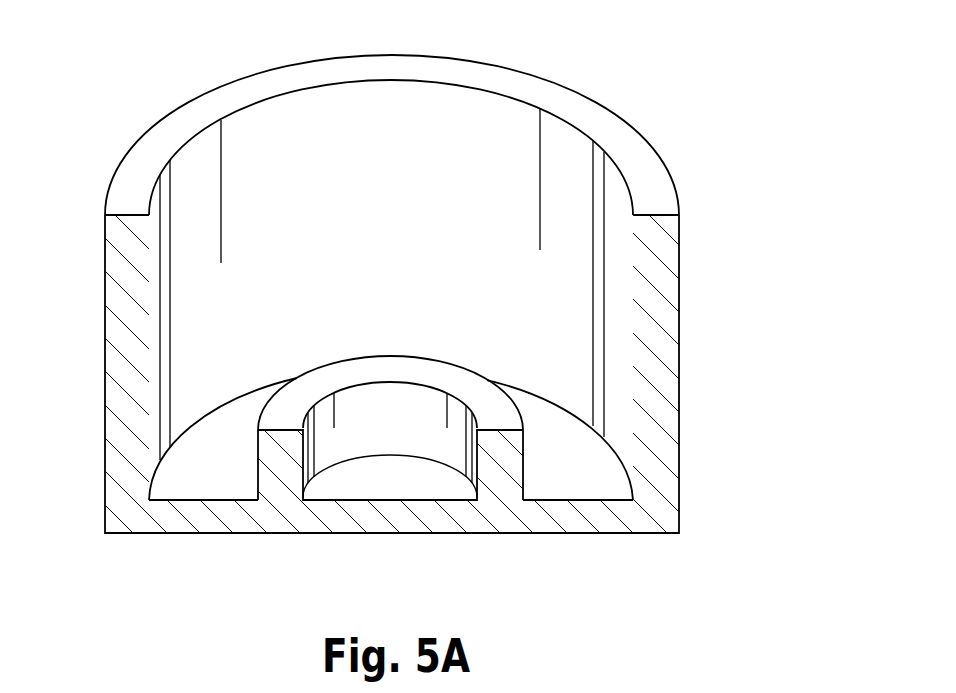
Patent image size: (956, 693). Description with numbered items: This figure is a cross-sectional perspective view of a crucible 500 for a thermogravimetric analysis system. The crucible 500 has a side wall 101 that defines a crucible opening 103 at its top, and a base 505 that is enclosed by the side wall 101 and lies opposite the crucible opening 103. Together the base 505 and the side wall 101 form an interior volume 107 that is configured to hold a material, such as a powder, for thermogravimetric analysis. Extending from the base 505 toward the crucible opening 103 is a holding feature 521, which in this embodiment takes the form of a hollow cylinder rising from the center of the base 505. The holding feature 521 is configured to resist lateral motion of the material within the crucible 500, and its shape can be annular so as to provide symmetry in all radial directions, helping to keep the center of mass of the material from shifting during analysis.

The crucible 500 is at (92, 100).
The side wall 101 is at (112, 308).
The crucible opening 103 is at (523, 105).
The interior volume 107 is at (436, 228).
The base 505 is at (235, 522).
The holding feature 521 is at (503, 486).